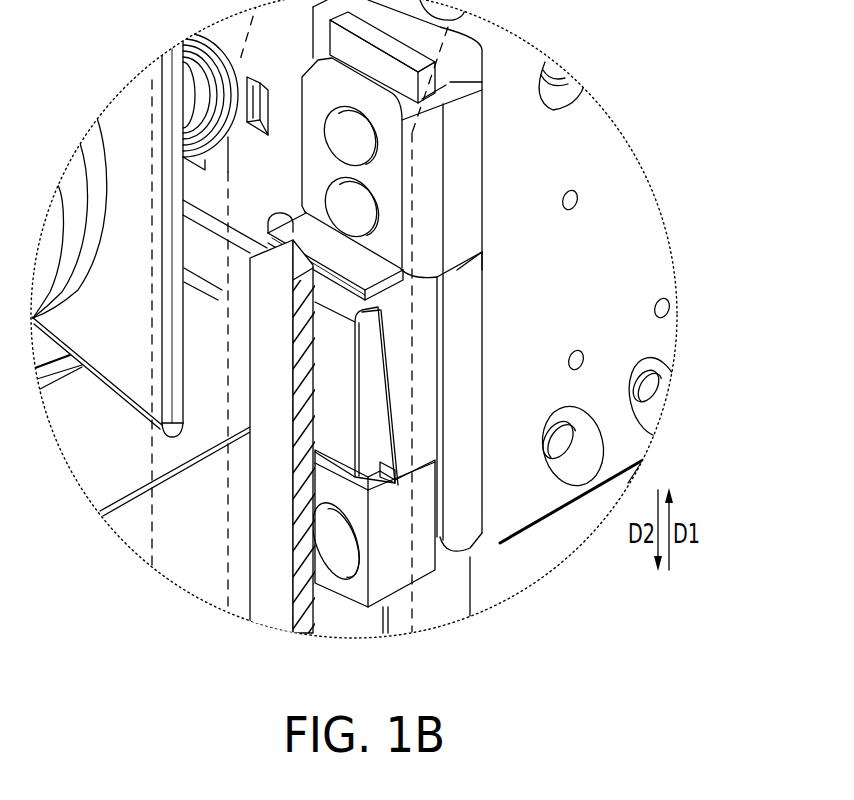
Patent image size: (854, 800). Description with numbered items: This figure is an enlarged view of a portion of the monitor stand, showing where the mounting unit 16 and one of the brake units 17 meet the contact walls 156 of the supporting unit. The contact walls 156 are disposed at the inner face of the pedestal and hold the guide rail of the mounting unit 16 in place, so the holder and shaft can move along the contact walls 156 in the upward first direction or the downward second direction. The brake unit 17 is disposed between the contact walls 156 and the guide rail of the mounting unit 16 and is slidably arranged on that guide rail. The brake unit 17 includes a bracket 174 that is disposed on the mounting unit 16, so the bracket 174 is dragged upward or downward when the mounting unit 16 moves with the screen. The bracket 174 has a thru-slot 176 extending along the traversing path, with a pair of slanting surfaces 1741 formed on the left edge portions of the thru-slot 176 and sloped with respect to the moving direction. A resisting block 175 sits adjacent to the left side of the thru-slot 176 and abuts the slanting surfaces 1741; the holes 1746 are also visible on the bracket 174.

The mounting unit 16 is at (590, 160).
The brake unit 17 is at (435, 309).
The bracket 174 is at (410, 276).
The resisting block 175 is at (340, 378).
The thru-slot 176 is at (429, 476).
The slanting surfaces 1741 is at (390, 465).
The through holes 1746 is at (353, 145).
The contact walls 156 is at (293, 595).